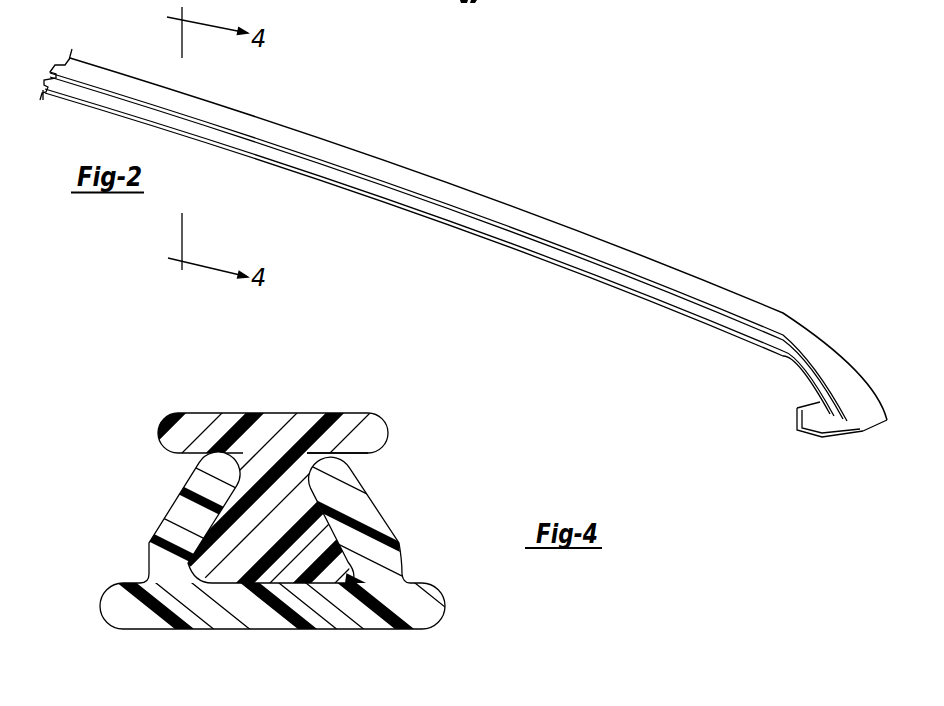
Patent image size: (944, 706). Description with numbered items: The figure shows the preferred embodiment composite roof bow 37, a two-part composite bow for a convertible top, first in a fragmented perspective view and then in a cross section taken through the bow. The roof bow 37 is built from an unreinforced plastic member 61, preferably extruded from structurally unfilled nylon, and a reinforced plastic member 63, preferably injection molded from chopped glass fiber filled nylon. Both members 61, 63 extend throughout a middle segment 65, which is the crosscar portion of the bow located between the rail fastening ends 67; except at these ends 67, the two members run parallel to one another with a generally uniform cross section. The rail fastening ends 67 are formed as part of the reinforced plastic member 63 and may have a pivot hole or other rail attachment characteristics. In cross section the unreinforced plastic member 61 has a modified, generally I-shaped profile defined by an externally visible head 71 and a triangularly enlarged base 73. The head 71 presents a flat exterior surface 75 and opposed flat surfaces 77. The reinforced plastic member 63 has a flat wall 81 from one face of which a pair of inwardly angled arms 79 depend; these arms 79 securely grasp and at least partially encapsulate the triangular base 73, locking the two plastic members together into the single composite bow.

In FIG. 2, the composite roof bow 37 is at (660, 219).
In FIG. 4, the composite roof bow 37 is at (503, 447).
In FIG. 2, the unreinforced plastic member 61 is at (467, 200).
In FIG. 4, the unreinforced plastic member 61 is at (273, 430).
In FIG. 2, the reinforced plastic member 63 is at (533, 258).
In FIG. 4, the reinforced plastic member 63 is at (330, 622).
In FIG. 2, the middle segment 65 is at (778, 325).
In FIG. 2, the rail fastening ends 67 is at (827, 422).
In FIG. 4, the head 71 is at (355, 427).
In FIG. 4, the triangularly enlarged base 73 is at (323, 530).
In FIG. 4, the flat exterior surface 75 is at (232, 413).
In FIG. 4, the opposed flat surfaces 77 is at (180, 459).
In FIG. 4, the inwardly angled arms 79 is at (180, 506).
In FIG. 4, the flat wall 81 is at (220, 627).